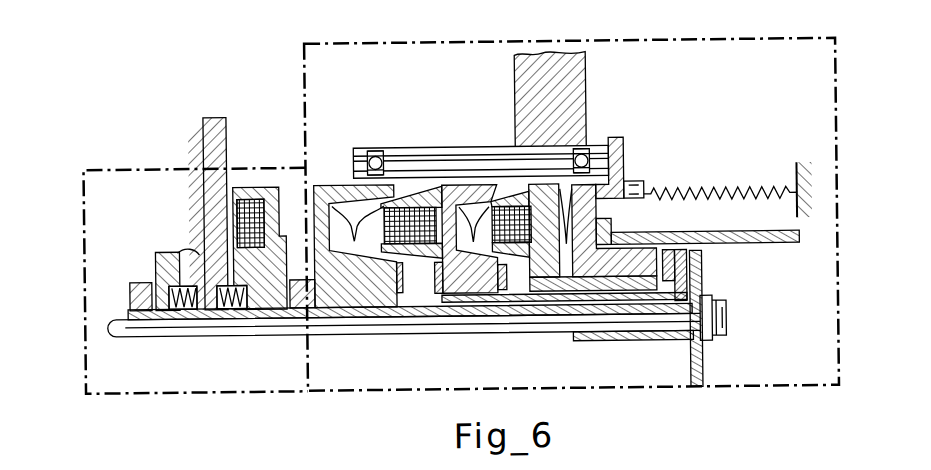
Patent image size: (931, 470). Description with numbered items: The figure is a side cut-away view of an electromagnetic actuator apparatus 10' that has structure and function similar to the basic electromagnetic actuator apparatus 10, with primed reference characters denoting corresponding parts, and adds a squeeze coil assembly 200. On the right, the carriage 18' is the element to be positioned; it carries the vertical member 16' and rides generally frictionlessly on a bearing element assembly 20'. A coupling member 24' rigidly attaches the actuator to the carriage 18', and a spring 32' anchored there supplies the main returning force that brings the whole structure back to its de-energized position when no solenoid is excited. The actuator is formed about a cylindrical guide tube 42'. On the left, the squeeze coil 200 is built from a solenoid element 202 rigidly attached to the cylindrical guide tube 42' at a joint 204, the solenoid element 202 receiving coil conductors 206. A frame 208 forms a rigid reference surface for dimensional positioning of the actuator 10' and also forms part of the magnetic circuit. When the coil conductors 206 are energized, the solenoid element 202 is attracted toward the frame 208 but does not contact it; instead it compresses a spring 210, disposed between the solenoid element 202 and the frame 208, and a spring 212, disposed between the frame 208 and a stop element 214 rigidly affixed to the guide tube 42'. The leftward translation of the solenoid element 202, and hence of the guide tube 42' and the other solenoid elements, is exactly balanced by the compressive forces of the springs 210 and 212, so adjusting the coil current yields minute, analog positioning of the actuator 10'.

The electromagnetic actuator apparatus 10 is at (571, 214).
The electromagnetic actuator apparatus 10' is at (193, 426).
The vertical member 16' is at (571, 98).
The carriage 18' is at (481, 143).
The bearing element assembly 20' is at (494, 138).
The coupling member 24' is at (697, 185).
The spring 32' is at (727, 182).
The cylindrical guide tube 42' is at (520, 286).
The squeeze coil assembly 200 is at (142, 203).
The solenoid element 202 is at (264, 333).
The joint 204 is at (268, 316).
The coil conductors 206 is at (252, 187).
The frame 208 is at (214, 118).
The spring 210 is at (232, 307).
The spring 212 is at (183, 307).
The stop element 214 is at (156, 262).